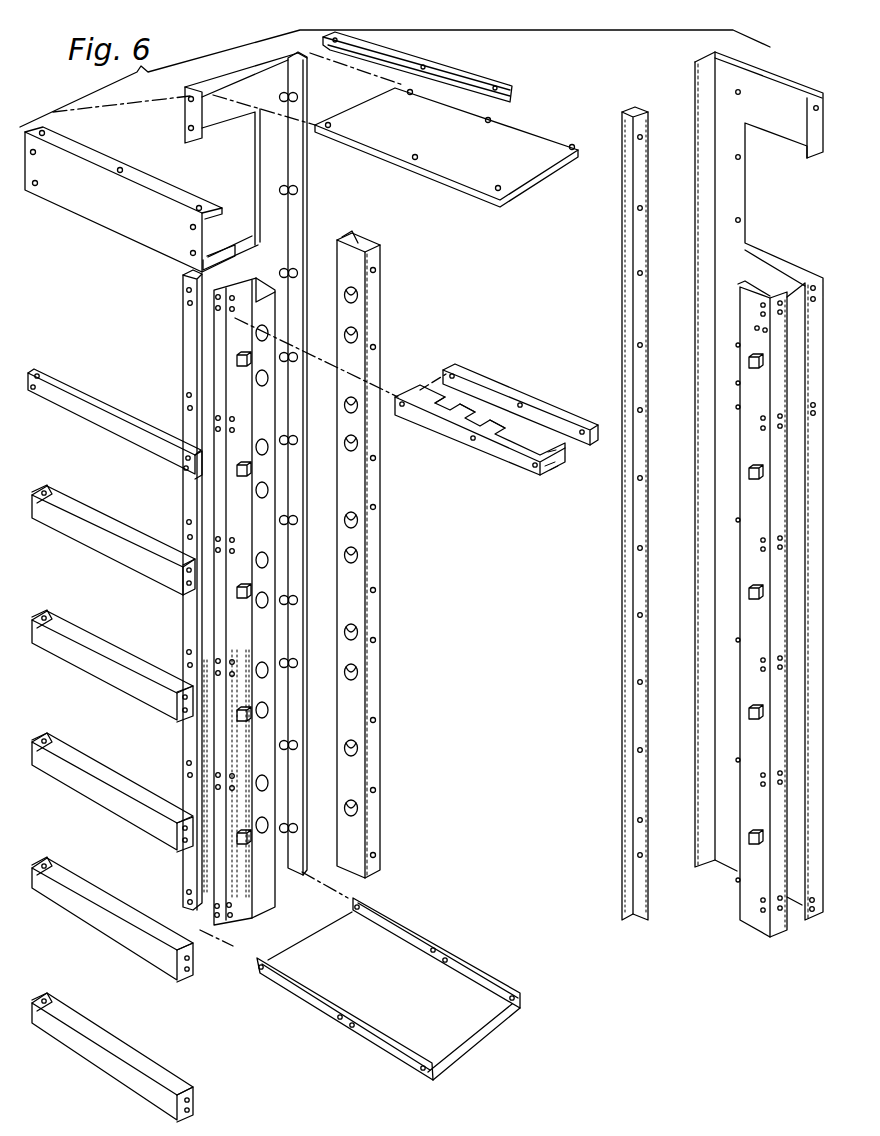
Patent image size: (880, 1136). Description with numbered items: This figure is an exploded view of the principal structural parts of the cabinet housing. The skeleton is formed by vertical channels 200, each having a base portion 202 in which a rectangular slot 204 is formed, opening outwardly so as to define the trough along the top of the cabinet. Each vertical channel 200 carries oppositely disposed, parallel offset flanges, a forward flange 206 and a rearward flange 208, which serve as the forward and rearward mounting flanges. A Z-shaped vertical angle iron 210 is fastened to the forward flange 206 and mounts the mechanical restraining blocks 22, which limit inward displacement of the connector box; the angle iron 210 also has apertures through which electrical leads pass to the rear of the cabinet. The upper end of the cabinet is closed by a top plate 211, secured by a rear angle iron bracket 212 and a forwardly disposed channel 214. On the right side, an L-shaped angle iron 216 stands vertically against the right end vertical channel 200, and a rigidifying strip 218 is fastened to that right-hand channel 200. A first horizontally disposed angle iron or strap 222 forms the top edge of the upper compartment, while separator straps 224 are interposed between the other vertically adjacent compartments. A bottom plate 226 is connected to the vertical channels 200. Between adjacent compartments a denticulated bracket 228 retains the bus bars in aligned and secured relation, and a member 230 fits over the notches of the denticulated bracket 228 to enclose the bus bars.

The vertical channel 200 is at (822, 72).
The base portion 202 is at (213, 103).
The rectangular slot 204 is at (262, 152).
The forward flange 206 is at (192, 335).
The rearward flange 208 is at (297, 155).
The Z-shaped vertical angle iron 210 is at (237, 295).
The top plate 211 is at (530, 158).
The rear angle iron bracket 212 is at (475, 80).
The forwardly disposed channel 214 is at (137, 215).
The L-shaped angle iron 216 is at (758, 398).
The rigidifying strip 218 is at (626, 366).
The mechanical restraining block 22 is at (238, 363).
The horizontally disposed angle iron or strap 222 is at (162, 450).
The separator strap 224 is at (87, 662).
The bottom plate 226 is at (400, 932).
The denticulated bracket 228 is at (442, 415).
The member 230 is at (484, 383).